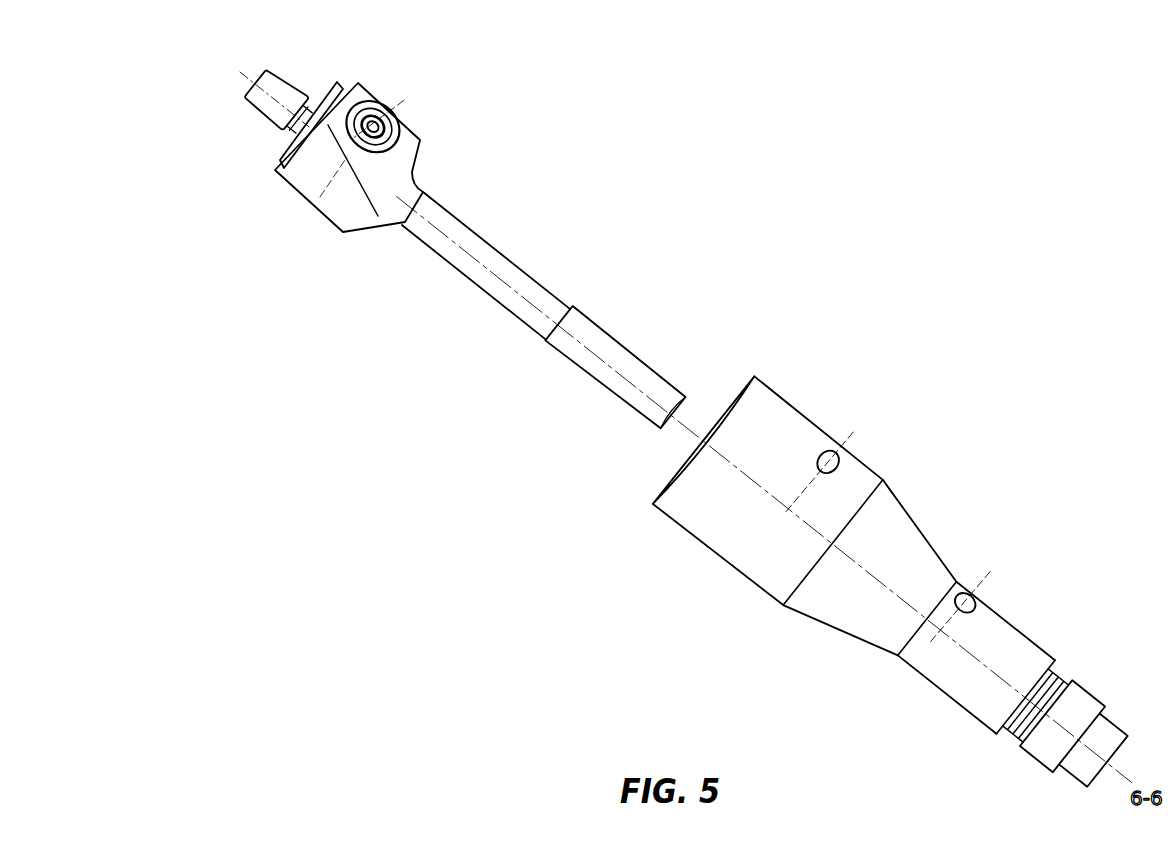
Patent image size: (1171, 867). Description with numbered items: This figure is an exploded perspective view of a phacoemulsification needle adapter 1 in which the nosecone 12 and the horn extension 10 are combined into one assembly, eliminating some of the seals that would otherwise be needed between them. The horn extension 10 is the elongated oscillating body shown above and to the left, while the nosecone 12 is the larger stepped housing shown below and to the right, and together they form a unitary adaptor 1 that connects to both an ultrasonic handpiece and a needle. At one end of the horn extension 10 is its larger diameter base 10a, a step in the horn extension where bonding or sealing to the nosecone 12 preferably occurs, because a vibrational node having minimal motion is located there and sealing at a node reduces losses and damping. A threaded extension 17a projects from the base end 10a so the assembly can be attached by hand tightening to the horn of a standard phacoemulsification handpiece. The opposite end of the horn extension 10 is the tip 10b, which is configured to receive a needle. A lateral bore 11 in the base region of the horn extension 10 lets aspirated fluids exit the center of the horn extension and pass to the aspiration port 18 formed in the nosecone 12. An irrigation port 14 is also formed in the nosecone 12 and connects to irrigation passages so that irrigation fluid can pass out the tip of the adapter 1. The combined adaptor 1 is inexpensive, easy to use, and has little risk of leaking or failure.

The phacoemulsification needle adapter 1 is at (661, 439).
The horn extension 10 is at (495, 287).
The larger diameter base 10a is at (337, 193).
The tip 10b is at (610, 355).
The lateral bore 11 is at (403, 122).
The nosecone 12 is at (950, 665).
The irrigation port 14 is at (967, 597).
The threaded extension 17a is at (267, 105).
The aspiration port 18 is at (826, 452).